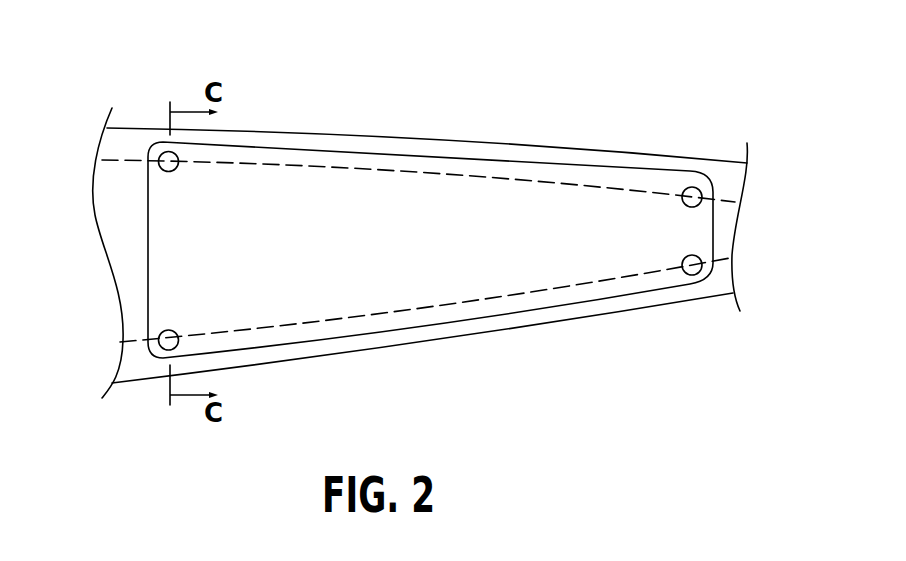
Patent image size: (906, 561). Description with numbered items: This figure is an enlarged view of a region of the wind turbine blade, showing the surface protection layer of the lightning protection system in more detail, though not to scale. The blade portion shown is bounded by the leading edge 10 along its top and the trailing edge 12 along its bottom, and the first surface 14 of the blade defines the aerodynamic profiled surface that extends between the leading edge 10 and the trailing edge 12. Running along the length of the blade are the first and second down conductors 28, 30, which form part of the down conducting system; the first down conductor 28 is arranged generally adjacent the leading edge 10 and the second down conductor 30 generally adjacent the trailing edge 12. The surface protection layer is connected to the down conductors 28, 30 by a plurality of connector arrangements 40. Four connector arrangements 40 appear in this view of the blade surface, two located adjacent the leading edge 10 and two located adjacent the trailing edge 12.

The leading edge 10 is at (667, 155).
The trailing edge 12 is at (686, 302).
The first surface 14 is at (733, 211).
The first down conductor 28 is at (593, 185).
The second down conductor 30 is at (562, 288).
The connector arrangement 40 is at (162, 151).